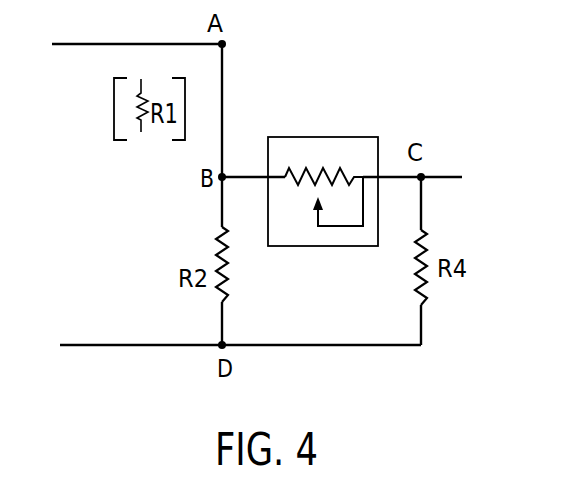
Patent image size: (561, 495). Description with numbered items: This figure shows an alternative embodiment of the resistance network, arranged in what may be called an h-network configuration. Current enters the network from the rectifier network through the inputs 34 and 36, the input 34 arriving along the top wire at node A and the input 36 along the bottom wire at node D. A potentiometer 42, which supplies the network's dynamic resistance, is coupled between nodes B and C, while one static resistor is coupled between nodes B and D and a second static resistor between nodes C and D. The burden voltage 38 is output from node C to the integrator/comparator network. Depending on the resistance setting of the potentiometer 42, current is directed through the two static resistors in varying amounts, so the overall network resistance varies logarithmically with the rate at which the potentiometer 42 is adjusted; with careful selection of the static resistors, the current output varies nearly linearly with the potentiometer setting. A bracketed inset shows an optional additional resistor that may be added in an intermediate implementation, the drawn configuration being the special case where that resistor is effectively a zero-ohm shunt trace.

The input 34 is at (103, 44).
The input 36 is at (68, 345).
The burden voltage 38 is at (452, 176).
The potentiometer 42 is at (311, 137).